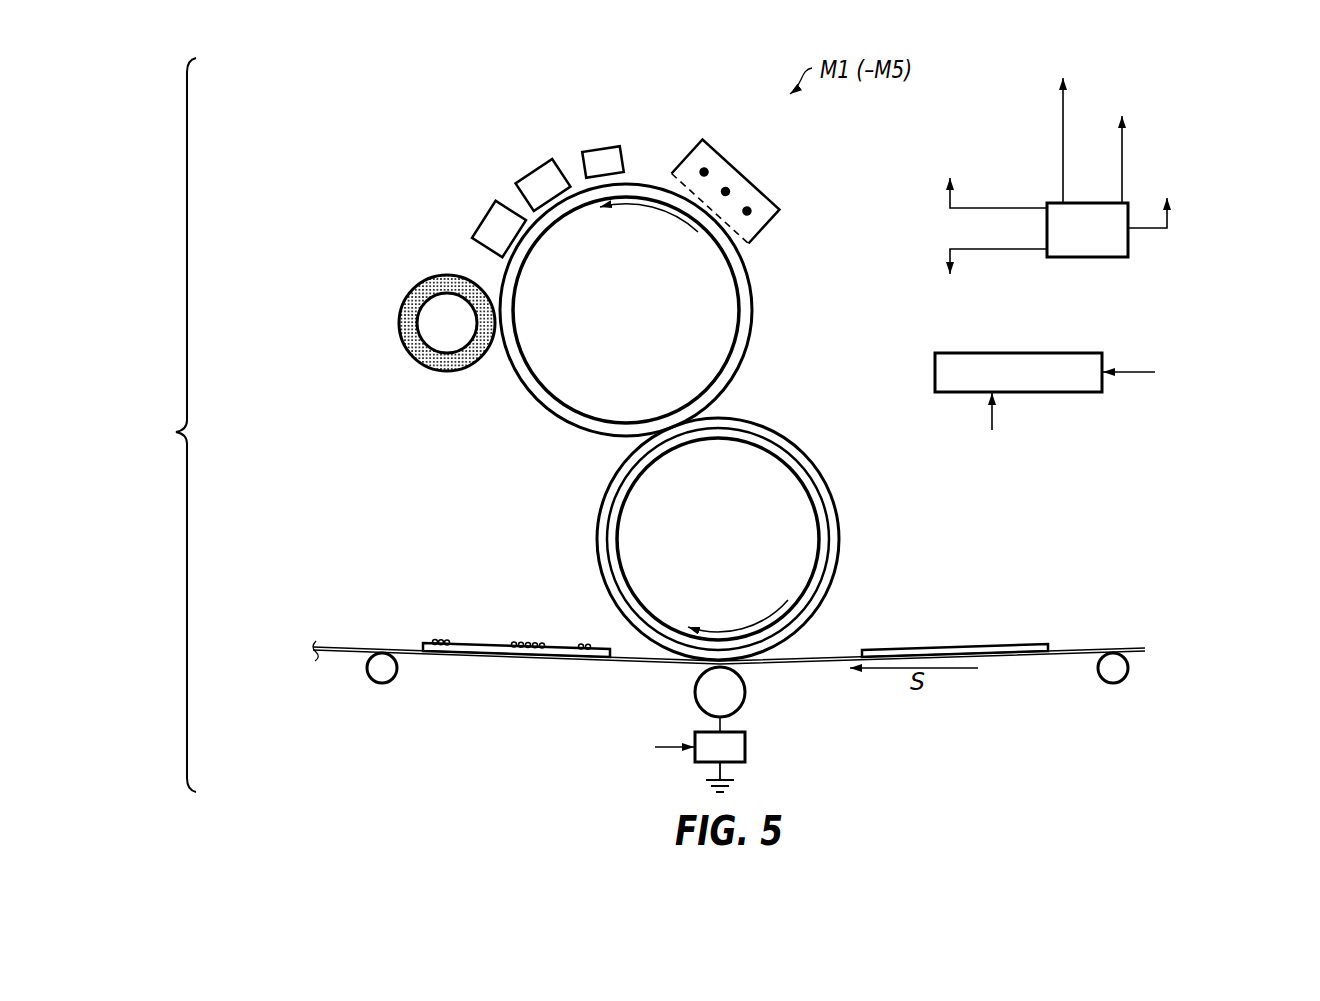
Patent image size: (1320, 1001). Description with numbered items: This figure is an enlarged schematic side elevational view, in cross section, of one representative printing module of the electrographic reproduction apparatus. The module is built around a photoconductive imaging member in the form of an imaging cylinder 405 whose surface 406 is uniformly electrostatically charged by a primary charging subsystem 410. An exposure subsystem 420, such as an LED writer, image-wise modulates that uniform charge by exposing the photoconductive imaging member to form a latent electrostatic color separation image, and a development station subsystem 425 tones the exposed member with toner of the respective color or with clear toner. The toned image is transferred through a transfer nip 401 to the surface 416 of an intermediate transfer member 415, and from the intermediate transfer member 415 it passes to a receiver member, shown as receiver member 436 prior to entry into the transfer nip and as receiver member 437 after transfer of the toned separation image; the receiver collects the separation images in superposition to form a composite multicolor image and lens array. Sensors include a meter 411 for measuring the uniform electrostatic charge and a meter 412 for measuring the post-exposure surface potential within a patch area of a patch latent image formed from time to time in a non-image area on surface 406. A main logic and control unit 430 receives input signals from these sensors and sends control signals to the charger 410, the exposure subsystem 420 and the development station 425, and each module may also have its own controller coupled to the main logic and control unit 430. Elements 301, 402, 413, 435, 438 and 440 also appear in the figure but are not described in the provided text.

The receiver transport web 301 is at (335, 648).
The transfer nip 401 is at (633, 444).
The second transfer nip 402 is at (760, 660).
The imaging cylinder 405 is at (751, 271).
The surface of photoconductive imaging member 406 is at (745, 364).
The primary charging subsystem 410 is at (745, 164).
The meter 411 is at (597, 148).
The meter 412 is at (482, 218).
The erase lamp / exposure sensor 413 is at (689, 184).
The intermediate transfer member 415 is at (809, 449).
The surface of intermediate transfer member 416 is at (840, 556).
The exposure subsystem 420 is at (532, 170).
The development station subsystem 425 is at (400, 322).
The logic and control unit 430 is at (1128, 243).
The transfer backup roller 435 is at (694, 702).
The receiver member 436 is at (958, 643).
The receiver member 437 is at (473, 642).
The electrostatic hold-down elements 438 is at (530, 643).
The power supply (PS) 440 is at (760, 740).